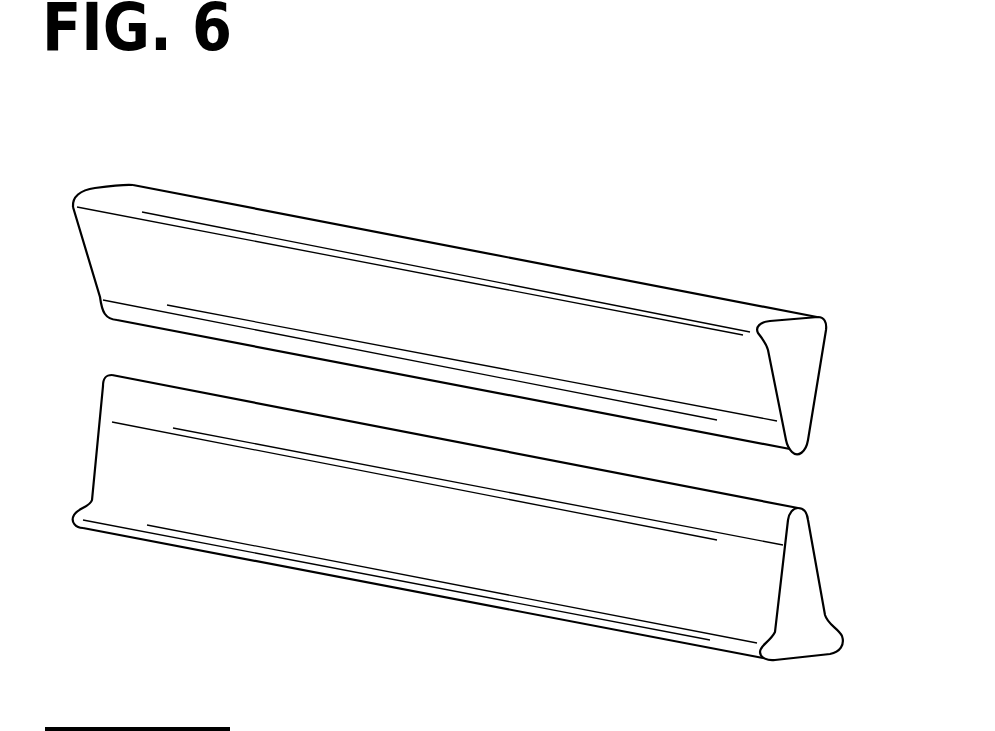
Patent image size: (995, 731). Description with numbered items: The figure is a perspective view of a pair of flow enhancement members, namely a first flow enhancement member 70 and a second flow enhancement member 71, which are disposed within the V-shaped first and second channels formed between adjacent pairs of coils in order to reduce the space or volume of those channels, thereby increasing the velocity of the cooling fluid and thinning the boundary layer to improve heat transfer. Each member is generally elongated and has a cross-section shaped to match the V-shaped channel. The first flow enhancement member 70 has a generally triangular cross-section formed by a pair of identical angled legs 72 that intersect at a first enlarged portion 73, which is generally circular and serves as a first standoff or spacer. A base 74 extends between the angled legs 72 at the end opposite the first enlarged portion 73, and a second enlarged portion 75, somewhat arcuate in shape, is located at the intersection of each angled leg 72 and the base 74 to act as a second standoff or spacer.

The first flow enhancement member 70 is at (411, 628).
The second flow enhancement member 71 is at (388, 209).
The angled leg 72 is at (107, 255).
The first enlarged portion 73 is at (810, 508).
The base 74 is at (162, 202).
The second enlarged portion 75 is at (748, 338).